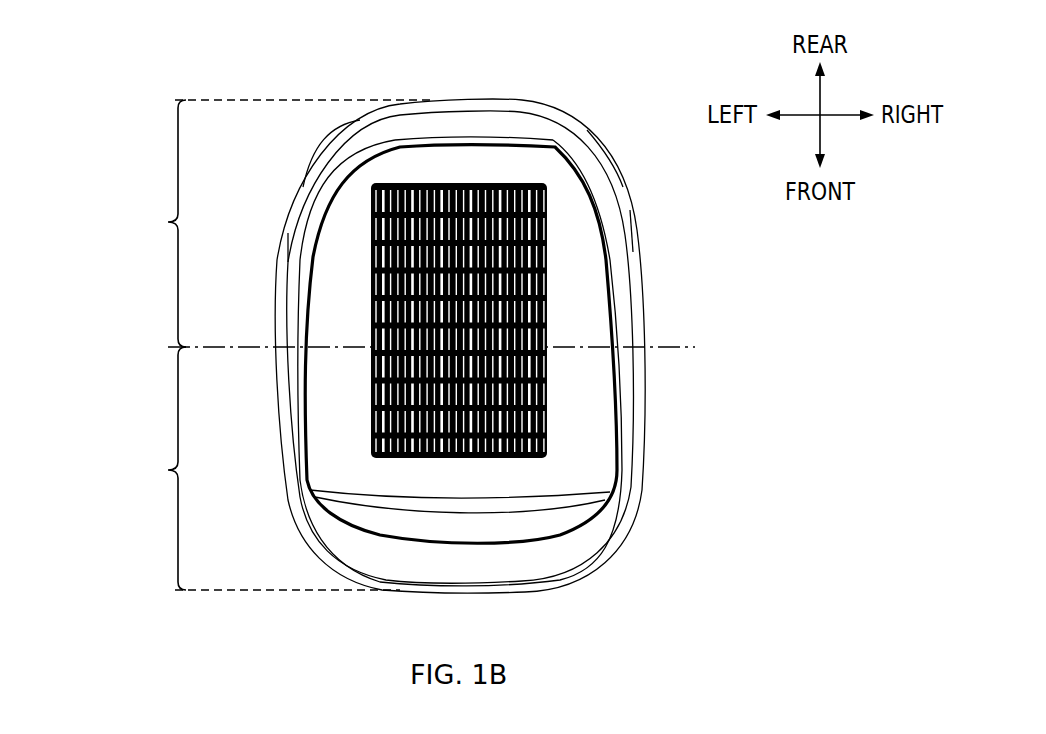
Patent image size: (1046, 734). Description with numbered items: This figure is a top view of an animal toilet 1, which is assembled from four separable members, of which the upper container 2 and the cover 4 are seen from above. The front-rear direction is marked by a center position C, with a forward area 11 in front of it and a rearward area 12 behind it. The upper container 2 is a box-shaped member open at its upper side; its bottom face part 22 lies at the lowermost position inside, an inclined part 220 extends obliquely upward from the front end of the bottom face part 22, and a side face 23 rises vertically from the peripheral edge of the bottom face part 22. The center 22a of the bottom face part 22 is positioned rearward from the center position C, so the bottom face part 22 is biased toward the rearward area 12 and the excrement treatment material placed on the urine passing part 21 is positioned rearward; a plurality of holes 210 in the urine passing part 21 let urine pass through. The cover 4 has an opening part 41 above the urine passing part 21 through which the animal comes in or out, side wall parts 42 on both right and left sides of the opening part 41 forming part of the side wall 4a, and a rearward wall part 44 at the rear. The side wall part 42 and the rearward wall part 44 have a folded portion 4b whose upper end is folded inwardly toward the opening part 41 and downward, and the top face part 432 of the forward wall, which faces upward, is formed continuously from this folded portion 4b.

The animal toilet 1 is at (642, 88).
The upper container 2 is at (575, 530).
The cover 4 is at (640, 181).
The side wall 4a is at (660, 362).
The folded portion 4b is at (420, 145).
The forward area 11 is at (127, 468).
The rearward area 12 is at (120, 223).
The urine passing part 21 is at (550, 442).
The bottom face part 22 is at (548, 320).
The center of the bottom face part 22a is at (463, 322).
The side face 23 is at (598, 385).
The opening part 41 is at (563, 148).
The side wall part 42 is at (297, 265).
The rearward wall part 44 is at (508, 130).
The holes 210 is at (523, 415).
The inclined part 220 is at (553, 488).
The top face part 432 is at (541, 567).
The center position C is at (425, 348).